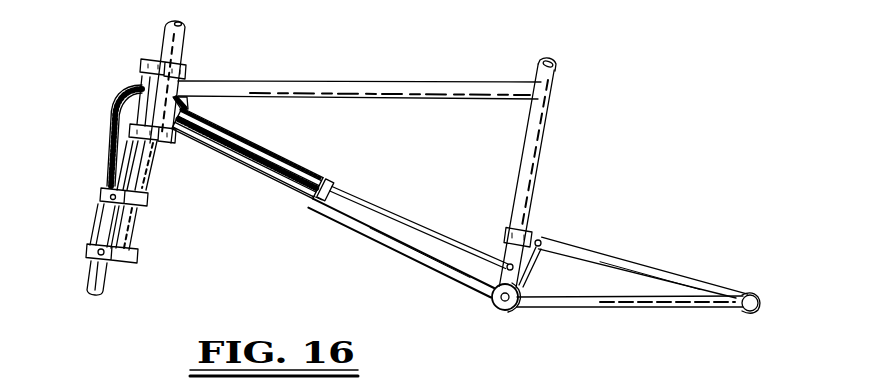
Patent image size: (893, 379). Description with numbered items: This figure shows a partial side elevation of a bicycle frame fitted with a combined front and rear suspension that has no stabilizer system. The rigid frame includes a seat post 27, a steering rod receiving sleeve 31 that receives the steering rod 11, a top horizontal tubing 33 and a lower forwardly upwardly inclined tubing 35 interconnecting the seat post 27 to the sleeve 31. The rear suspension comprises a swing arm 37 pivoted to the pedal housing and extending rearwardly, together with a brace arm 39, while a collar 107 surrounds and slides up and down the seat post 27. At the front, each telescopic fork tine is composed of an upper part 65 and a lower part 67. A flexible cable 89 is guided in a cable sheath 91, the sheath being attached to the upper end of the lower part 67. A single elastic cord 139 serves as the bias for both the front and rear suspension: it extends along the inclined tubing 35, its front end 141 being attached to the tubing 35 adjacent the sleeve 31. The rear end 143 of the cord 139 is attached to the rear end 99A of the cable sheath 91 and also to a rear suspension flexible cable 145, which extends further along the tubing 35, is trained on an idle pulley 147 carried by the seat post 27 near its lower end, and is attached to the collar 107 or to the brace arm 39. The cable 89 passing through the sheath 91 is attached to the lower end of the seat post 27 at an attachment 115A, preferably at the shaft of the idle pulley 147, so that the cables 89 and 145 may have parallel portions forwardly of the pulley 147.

The steering rod 11 is at (164, 37).
The seat post 27 is at (523, 167).
The steering rod receiving sleeve 31 is at (179, 93).
The top horizontal tubing 33 is at (365, 82).
The lower forwardly upwardly inclined tubing 35 is at (379, 243).
The swing arm 37 is at (632, 309).
The brace arm 39 is at (648, 272).
The upper part of tine 65 is at (137, 150).
The lower part of tine 67 is at (90, 283).
The flexible cable 89 is at (111, 222).
The cable sheath 91 is at (119, 100).
The rear end of cable sheath 99A is at (331, 183).
The collar 107 is at (513, 230).
The attachment 115A is at (527, 267).
The elastic cord 139 is at (276, 181).
The front end of cord 141 is at (186, 126).
The rear end of cord 143 is at (319, 201).
The rear suspension flexible cable 145 is at (410, 250).
The idle pulley 147 is at (498, 311).